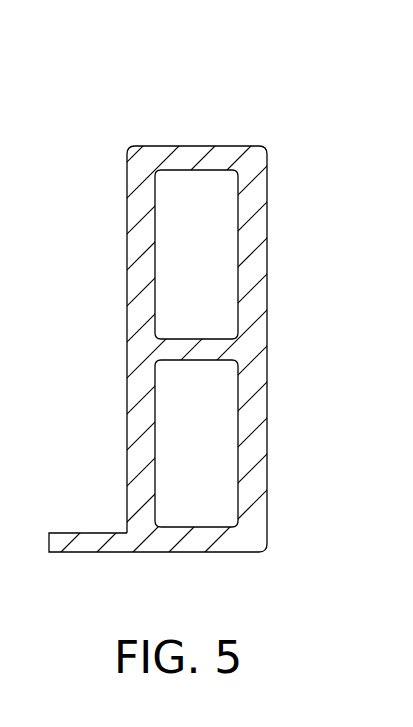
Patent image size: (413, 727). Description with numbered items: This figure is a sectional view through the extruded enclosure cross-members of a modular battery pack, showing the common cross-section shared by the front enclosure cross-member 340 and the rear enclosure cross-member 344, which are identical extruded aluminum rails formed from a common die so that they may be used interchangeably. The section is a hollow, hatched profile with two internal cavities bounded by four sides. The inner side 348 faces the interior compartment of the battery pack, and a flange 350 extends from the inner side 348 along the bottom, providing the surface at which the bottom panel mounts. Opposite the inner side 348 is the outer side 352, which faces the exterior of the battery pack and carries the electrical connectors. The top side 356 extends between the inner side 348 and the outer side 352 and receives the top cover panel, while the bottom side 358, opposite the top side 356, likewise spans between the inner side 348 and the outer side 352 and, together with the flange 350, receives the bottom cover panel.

The front enclosure cross-member 340 is at (147, 110).
The rear enclosure cross-member 344 is at (206, 363).
The inner side 348 is at (128, 243).
The flange 350 is at (61, 533).
The outer side 352 is at (267, 371).
The top side 356 is at (237, 146).
The bottom side 358 is at (255, 555).